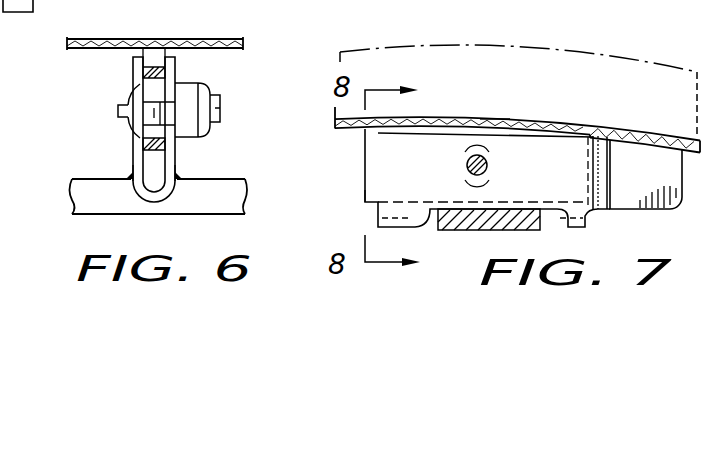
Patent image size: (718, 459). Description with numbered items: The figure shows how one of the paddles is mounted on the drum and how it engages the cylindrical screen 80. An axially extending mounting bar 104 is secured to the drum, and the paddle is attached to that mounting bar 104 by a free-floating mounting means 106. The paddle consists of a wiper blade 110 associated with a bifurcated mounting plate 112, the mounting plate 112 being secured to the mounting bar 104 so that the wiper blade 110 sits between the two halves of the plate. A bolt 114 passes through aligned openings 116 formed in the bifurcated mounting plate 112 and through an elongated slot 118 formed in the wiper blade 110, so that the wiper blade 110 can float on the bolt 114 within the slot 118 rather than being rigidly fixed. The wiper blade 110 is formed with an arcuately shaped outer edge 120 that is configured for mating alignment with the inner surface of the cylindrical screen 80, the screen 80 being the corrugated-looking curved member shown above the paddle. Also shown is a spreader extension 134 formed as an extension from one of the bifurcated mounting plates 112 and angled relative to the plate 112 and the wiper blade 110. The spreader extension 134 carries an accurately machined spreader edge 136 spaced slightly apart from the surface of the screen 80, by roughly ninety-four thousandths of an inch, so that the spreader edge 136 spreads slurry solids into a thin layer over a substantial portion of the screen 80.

In FIG. 6, the cylindrical screen 80 is at (221, 39).
In FIG. 7, the cylindrical screen 80 is at (557, 122).
In FIG. 6, the mounting bar 104 is at (85, 202).
In FIG. 7, the mounting bar 104 is at (523, 220).
In FIG. 6, the free-floating mounting means 106 is at (188, 170).
In FIG. 7, the free-floating mounting means 106 is at (366, 211).
In FIG. 6, the wiper blade 110 is at (148, 162).
In FIG. 7, the wiper blade 110 is at (365, 193).
In FIG. 6, the mounting plate 112 is at (177, 70).
In FIG. 7, the mounting plate 112 is at (549, 165).
In FIG. 6, the bolt 114 is at (120, 100).
In FIG. 7, the bolt 114 is at (466, 160).
In FIG. 6, the aligned openings 116 is at (130, 85).
In FIG. 6, the elongated slot 118 is at (133, 137).
In FIG. 7, the elongated slot 118 is at (462, 180).
In FIG. 6, the arcuately shaped outer edge 120 is at (153, 39).
In FIG. 7, the arcuately shaped outer edge 120 is at (494, 128).
In FIG. 7, the spreader extension 134 is at (656, 189).
In FIG. 7, the spreader edge 136 is at (641, 142).